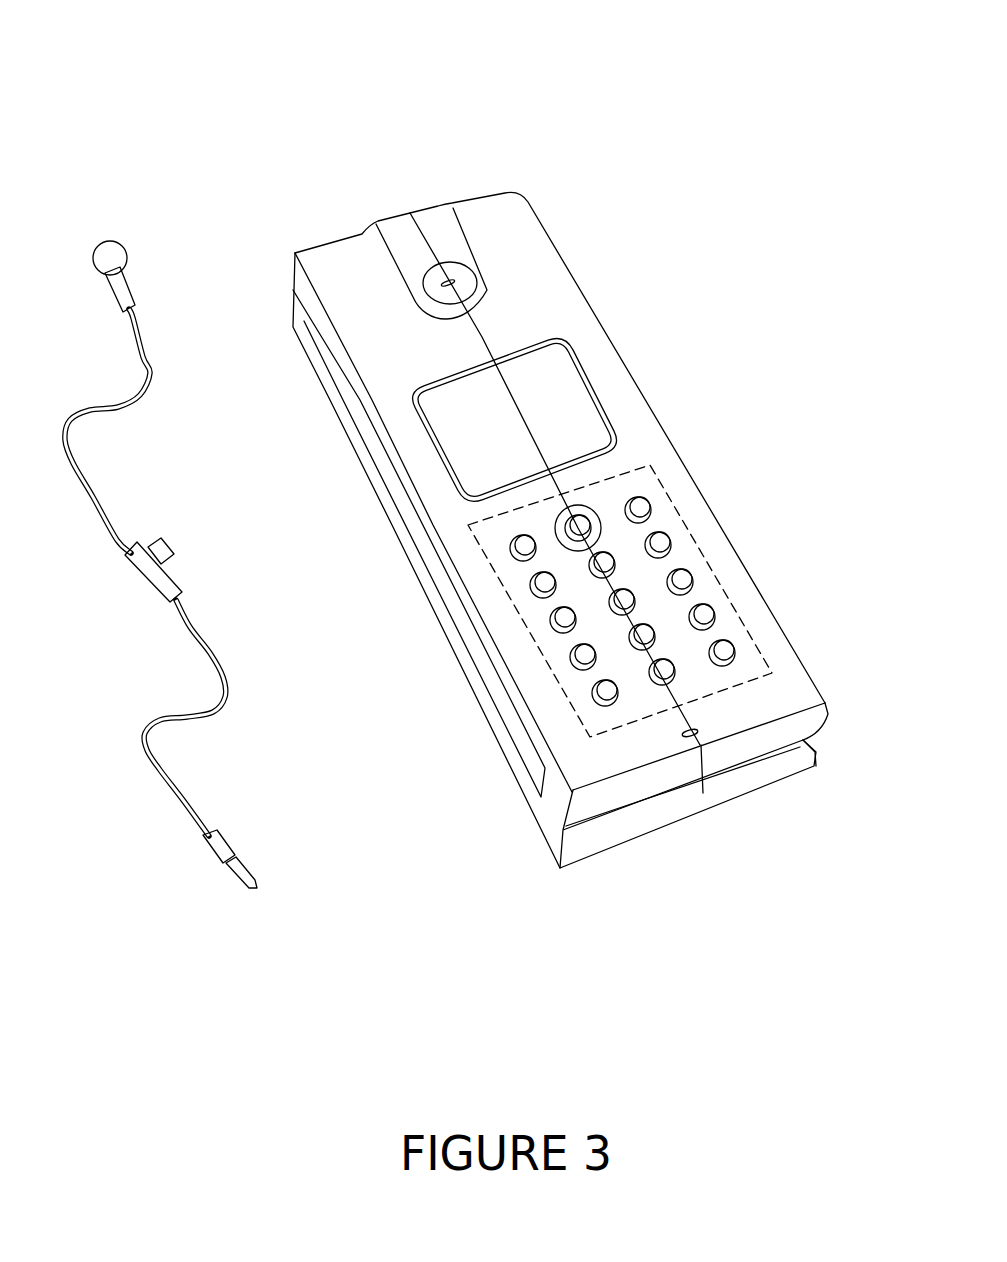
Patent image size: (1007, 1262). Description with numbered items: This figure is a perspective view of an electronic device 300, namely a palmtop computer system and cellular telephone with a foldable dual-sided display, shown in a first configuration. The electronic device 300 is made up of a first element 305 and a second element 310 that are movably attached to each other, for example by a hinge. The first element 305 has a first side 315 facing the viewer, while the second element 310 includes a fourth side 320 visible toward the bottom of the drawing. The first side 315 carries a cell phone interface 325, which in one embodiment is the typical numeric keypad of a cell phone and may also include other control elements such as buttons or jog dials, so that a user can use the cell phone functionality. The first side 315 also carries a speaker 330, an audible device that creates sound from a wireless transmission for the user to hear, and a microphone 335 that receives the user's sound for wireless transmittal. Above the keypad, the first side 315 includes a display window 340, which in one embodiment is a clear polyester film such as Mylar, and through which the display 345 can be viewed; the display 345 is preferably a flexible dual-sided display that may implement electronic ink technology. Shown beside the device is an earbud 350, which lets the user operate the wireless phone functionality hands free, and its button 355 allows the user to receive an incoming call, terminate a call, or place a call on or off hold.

The electronic device 300 is at (68, 29).
The first element 305 is at (797, 707).
The second element 310 is at (763, 770).
The first side 315 is at (525, 293).
The fourth side 320 is at (615, 848).
The cell phone interface 325 is at (687, 527).
The speaker 330 is at (430, 297).
The microphone 335 is at (700, 727).
The display window 340 is at (437, 440).
The display 345 is at (560, 407).
The earbud 350 is at (248, 684).
The button 355 is at (160, 543).